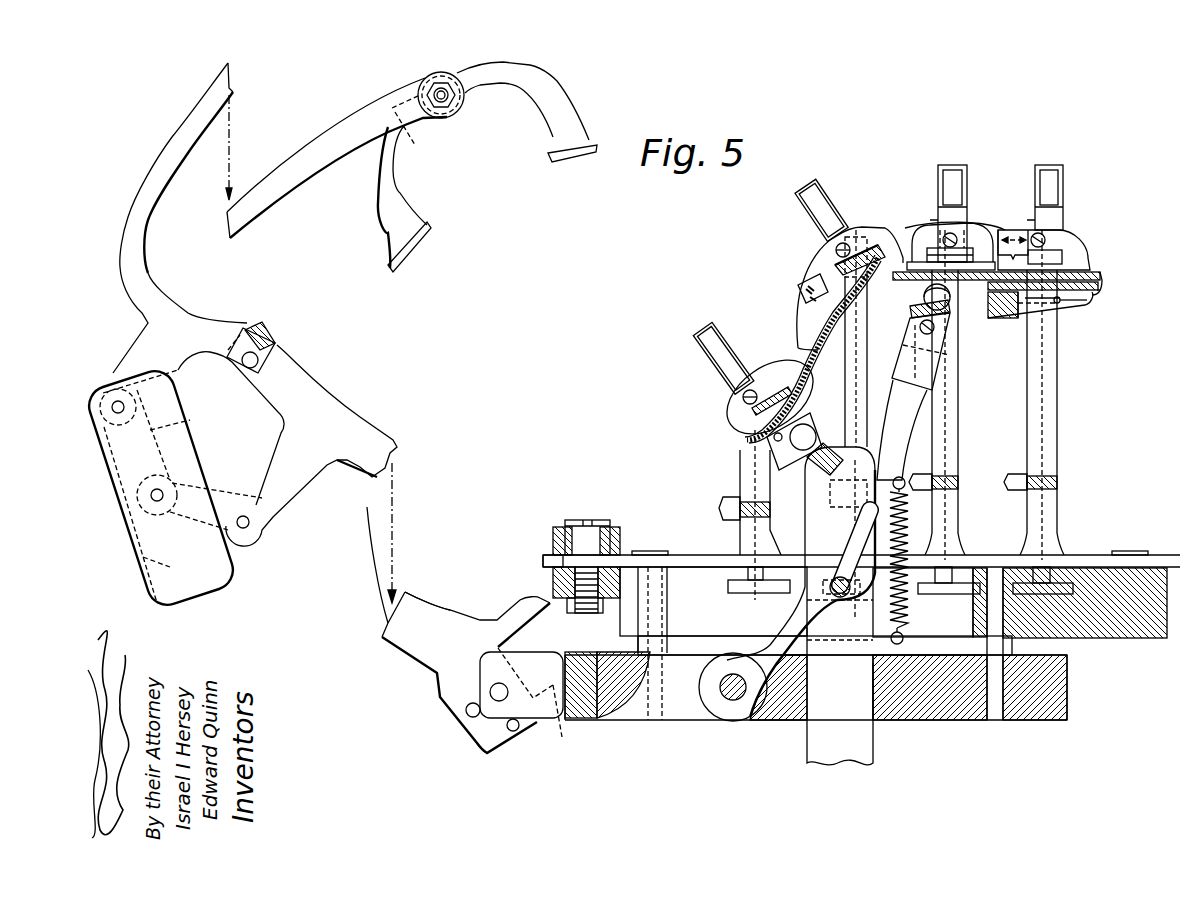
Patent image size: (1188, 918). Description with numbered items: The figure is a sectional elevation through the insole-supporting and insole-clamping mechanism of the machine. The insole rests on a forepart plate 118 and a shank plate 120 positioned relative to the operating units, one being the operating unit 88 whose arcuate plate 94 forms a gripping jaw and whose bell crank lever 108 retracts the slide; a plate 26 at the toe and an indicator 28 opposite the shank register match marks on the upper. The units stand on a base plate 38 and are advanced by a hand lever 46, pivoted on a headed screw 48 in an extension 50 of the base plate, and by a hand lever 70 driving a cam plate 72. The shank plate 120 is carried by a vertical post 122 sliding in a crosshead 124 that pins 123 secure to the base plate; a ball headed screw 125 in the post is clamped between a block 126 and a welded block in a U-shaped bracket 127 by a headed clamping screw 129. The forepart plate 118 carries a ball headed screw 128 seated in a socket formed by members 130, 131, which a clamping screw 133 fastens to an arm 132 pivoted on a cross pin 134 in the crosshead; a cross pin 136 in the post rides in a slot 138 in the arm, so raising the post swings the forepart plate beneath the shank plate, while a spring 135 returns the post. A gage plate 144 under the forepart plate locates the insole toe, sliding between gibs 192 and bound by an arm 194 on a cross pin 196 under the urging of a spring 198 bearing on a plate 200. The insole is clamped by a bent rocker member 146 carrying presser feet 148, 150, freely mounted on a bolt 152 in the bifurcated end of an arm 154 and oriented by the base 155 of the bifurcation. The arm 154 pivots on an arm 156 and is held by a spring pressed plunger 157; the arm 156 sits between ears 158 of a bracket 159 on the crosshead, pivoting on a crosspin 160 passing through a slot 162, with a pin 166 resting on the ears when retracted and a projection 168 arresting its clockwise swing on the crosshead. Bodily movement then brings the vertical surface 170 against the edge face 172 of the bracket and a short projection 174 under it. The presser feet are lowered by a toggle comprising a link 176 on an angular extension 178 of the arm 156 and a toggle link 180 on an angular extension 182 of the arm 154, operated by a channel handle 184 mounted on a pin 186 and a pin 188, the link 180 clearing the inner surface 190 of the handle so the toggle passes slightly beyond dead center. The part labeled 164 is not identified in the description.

The plate 26 is at (1010, 231).
The indicator 28 is at (806, 290).
The base plate 38 is at (1130, 636).
The hand lever 46 is at (613, 535).
The headed screw 48 is at (590, 520).
The extension 50 is at (553, 575).
The hand lever 70 is at (553, 538).
The cam plate 72 is at (695, 555).
The operating unit 88 is at (924, 205).
The arcuate plate 94 is at (965, 230).
The bell crank lever 108 is at (940, 175).
The forepart plate 118 is at (1050, 283).
The shank plate 120 is at (815, 352).
The vertical post 122 is at (870, 750).
The pins 123 is at (665, 590).
The crosshead 124 is at (970, 722).
The ball headed screw 125 is at (770, 457).
The block 126 is at (792, 465).
The U-shaped bracket 127 is at (760, 440).
The ball headed screw 128 is at (924, 296).
The headed clamping screw 129 is at (803, 432).
The member 130 is at (945, 318).
The member 131 is at (935, 378).
The arm 132 is at (915, 412).
The clamping screw 133 is at (933, 332).
The cross pin 134 is at (733, 701).
The spring 135 is at (905, 596).
The cross pin 136 is at (833, 589).
The slot 138 is at (847, 541).
The gage plate 144 is at (1099, 292).
The rocker member 146 is at (498, 82).
The presser foot 148 is at (570, 154).
The presser foot 150 is at (415, 246).
The bolt 152 is at (442, 100).
The arm 154 is at (293, 160).
The base 155 is at (413, 134).
The arm 156 is at (365, 467).
The spring pressed plunger 157 is at (270, 332).
The ears 158 is at (480, 680).
The bracket 159 is at (585, 700).
The crosspin 160 is at (493, 685).
The slot 162 is at (470, 714).
The lever end 164 is at (487, 755).
The pin 166 is at (515, 730).
The projection 168 is at (505, 600).
The vertical surface 170 is at (500, 645).
The vertical edge face 172 is at (565, 680).
The short projection 174 is at (566, 720).
The link 176 is at (223, 503).
The angular extension 178 is at (290, 492).
The toggle link 180 is at (193, 428).
The angular extension 182 is at (139, 342).
The handle 184 is at (233, 590).
The pin 186 is at (115, 410).
The pin 188 is at (155, 499).
The inner surface 190 is at (172, 567).
The gib 192 is at (1090, 303).
The arm 194 is at (1035, 320).
The cross pin 196 is at (1062, 304).
The spring 198 is at (1020, 312).
The plate 200 is at (995, 306).